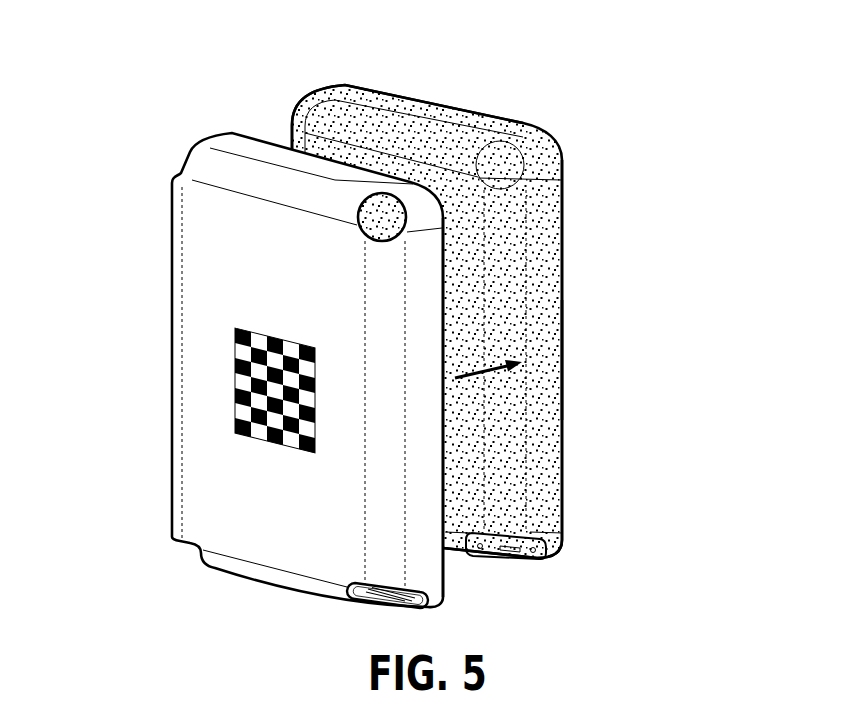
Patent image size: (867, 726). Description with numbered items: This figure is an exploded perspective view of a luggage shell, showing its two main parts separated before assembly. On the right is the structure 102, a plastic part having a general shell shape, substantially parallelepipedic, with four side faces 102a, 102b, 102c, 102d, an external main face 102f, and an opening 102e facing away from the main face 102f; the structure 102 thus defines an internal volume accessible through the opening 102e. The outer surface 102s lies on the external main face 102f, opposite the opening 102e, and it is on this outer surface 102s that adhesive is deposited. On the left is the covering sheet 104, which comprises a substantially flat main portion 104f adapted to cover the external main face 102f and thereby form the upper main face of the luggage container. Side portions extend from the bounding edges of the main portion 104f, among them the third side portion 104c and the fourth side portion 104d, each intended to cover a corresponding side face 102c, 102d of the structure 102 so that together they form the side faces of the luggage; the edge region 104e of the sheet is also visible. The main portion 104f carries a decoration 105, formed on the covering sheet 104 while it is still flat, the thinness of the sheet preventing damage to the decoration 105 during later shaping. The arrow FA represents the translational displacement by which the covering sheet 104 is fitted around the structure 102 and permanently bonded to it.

The structure 102 is at (540, 240).
The side face 102a is at (556, 363).
The side face 102b is at (252, 108).
The side face 102c is at (490, 575).
The side face 102d is at (430, 104).
The opening 102e is at (588, 306).
The external main face 102f is at (481, 418).
The outer surface 102s is at (475, 186).
The covering sheet 104 is at (190, 275).
The third side portion 104c is at (270, 583).
The fourth side portion 104d is at (273, 155).
The side edge of front case 104e is at (427, 465).
The main portion 104f is at (220, 418).
The decoration 105 is at (216, 367).
The arrow FA is at (488, 350).